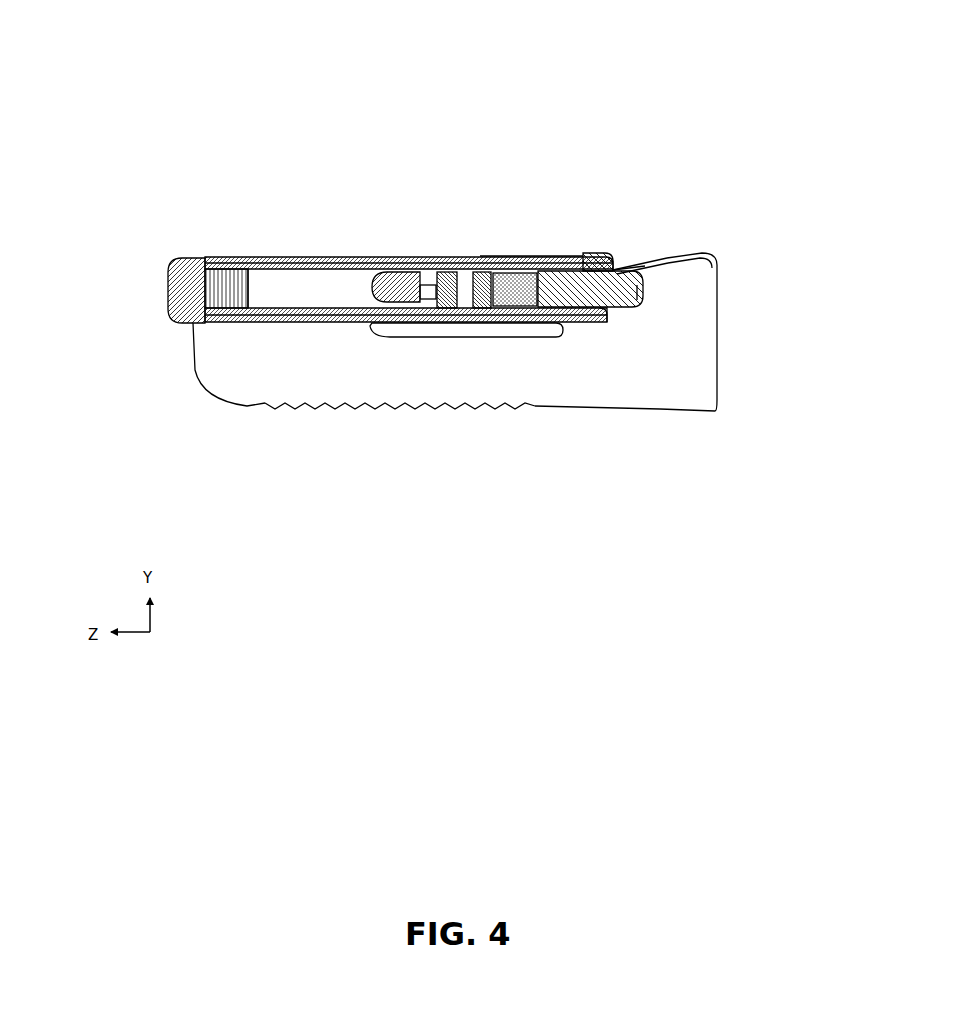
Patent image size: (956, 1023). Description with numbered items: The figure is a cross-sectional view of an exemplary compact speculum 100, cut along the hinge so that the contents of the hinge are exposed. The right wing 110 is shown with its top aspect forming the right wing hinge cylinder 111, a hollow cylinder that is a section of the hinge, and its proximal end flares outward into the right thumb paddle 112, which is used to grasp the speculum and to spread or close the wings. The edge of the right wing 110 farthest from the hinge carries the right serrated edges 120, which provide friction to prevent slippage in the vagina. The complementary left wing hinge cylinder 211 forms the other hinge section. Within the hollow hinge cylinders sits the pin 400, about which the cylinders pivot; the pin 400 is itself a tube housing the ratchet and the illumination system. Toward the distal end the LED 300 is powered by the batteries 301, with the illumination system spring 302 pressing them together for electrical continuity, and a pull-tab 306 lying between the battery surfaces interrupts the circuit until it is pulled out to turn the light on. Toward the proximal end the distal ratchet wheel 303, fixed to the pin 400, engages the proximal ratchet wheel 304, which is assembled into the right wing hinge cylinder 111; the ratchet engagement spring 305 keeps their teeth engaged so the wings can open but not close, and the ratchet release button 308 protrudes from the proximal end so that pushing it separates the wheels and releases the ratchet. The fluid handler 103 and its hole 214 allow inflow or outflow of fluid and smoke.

The speculum 100 is at (588, 91).
The fluid handler 103 is at (450, 325).
The right wing 110 is at (481, 320).
The right wing hinge cylinder 111 is at (553, 258).
The right thumb paddle 112 is at (703, 360).
The right serrated edges 120 is at (292, 418).
The left wing hinge cylinder 211 is at (302, 262).
The hole 214 is at (332, 323).
The LED 300 is at (367, 317).
The batteries 301 is at (477, 283).
The illumination system spring 302 is at (537, 310).
The distal ratchet wheel 303 is at (583, 268).
The proximal ratchet wheel 304 is at (607, 311).
The ratchet engagement spring 305 is at (232, 272).
The pull-tab 306 is at (647, 268).
The ratchet release button 308 is at (637, 292).
The pin 400 is at (393, 273).